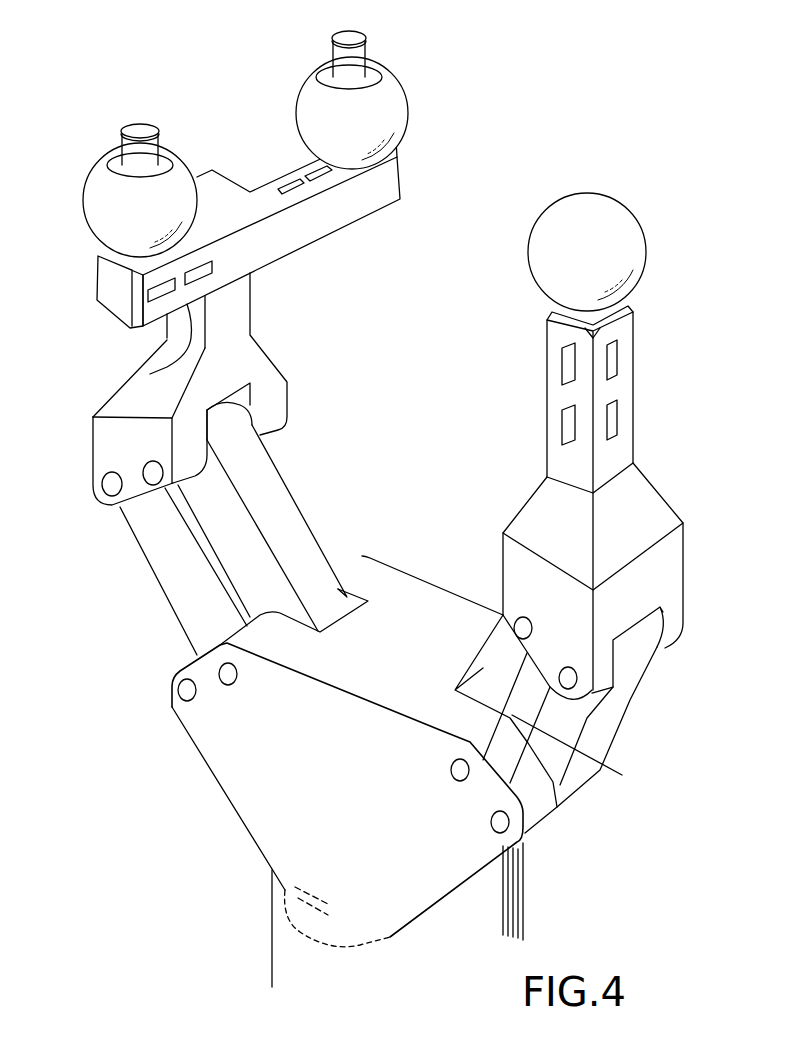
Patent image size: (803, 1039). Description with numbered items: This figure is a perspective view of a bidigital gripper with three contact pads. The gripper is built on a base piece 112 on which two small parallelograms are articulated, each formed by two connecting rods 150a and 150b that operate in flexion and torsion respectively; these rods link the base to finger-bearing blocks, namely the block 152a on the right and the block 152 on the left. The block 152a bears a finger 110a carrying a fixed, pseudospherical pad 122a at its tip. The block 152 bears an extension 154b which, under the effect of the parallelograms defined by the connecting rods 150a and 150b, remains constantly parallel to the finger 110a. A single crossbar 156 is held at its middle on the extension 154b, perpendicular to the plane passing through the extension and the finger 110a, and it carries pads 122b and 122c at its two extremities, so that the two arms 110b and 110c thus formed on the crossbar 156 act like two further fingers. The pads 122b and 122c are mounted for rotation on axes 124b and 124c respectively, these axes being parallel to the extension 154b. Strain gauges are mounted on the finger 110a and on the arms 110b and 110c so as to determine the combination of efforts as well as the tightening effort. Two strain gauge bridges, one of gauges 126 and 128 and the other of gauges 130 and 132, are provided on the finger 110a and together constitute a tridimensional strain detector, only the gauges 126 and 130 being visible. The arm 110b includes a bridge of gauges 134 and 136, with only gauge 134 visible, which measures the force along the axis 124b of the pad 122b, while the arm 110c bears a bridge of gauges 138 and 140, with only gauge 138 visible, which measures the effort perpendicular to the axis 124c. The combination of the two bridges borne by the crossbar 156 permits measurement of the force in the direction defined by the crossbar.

The finger 110a is at (620, 452).
The arm of the crossbar 110b is at (380, 197).
The arm of the crossbar 110c is at (167, 366).
The base piece 112 is at (238, 788).
The pseudospherical pad 122a is at (548, 235).
The pad 122b is at (385, 103).
The pad 122c is at (98, 180).
The axis 124b is at (357, 35).
The axis 124c is at (143, 130).
The strain gauge 126 is at (567, 393).
The strain gauge 128 is at (642, 352).
The strain gauge 130 is at (612, 390).
The strain gauge 132 is at (537, 360).
The strain gauge 134 is at (307, 177).
The strain gauge 136 is at (341, 242).
The strain gauge 138 is at (170, 307).
The strain gauge 140 is at (95, 258).
The connecting rod 150a is at (613, 720).
The connecting rod 150b is at (242, 555).
The pivot block 152 is at (113, 498).
The finger-bearing block 152a is at (510, 570).
The extension 154b is at (237, 308).
The rotation arrow 156 is at (418, 290).